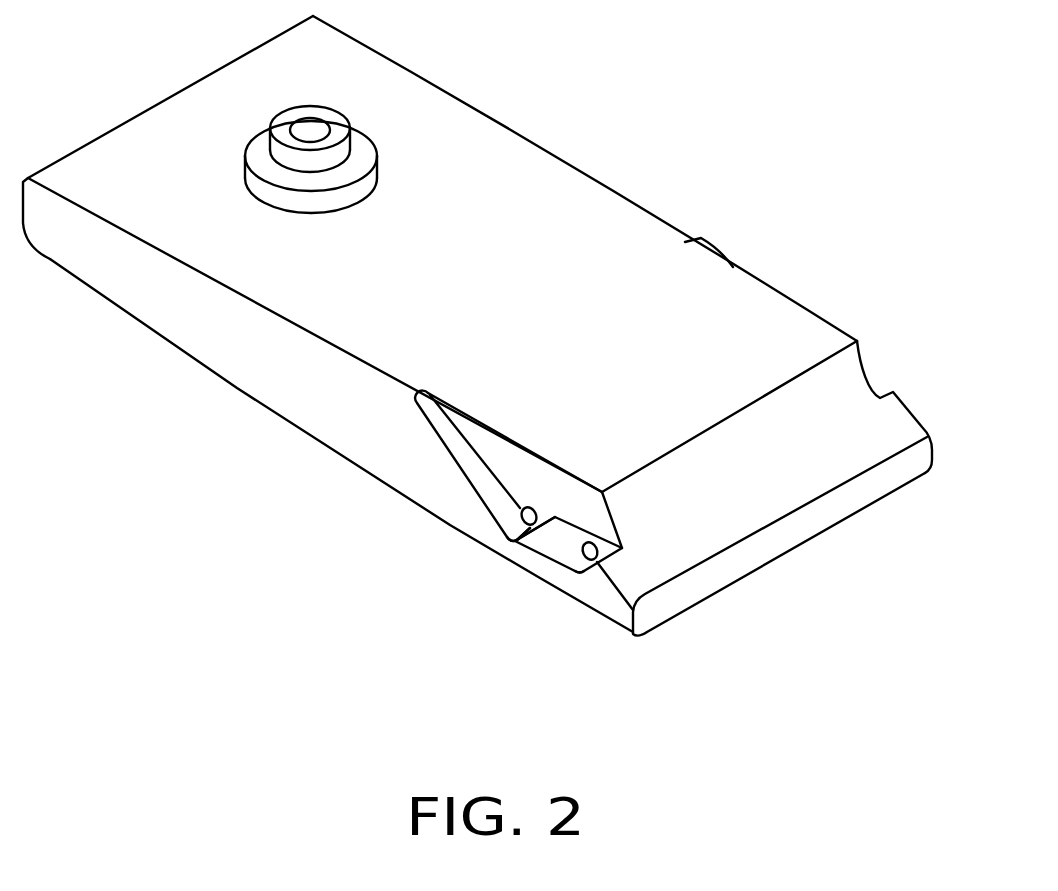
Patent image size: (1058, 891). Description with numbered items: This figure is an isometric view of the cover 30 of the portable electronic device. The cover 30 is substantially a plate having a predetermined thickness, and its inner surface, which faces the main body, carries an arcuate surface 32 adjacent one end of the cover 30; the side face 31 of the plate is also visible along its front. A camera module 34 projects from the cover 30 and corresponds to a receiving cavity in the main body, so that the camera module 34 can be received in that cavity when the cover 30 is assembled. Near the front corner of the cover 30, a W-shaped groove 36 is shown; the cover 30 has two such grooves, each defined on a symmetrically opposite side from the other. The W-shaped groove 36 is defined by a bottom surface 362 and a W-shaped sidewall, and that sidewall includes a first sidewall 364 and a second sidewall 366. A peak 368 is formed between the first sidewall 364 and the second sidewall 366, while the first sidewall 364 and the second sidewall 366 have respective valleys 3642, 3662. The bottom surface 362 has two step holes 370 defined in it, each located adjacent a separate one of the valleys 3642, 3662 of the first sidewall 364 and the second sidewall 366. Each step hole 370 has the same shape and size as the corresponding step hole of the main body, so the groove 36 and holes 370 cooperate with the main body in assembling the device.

The cover 30 is at (548, 117).
The front side face 31 is at (247, 263).
The arcuate surface 32 is at (720, 508).
The camera module 34 is at (302, 129).
The W-shaped groove 36 is at (399, 530).
The bottom surface 362 is at (472, 430).
The first sidewall 364 is at (589, 563).
The valley 3642 is at (573, 572).
The second sidewall 366 is at (430, 410).
The valley 3662 is at (530, 534).
The peak 368 is at (540, 538).
The step hole 370 is at (522, 513).